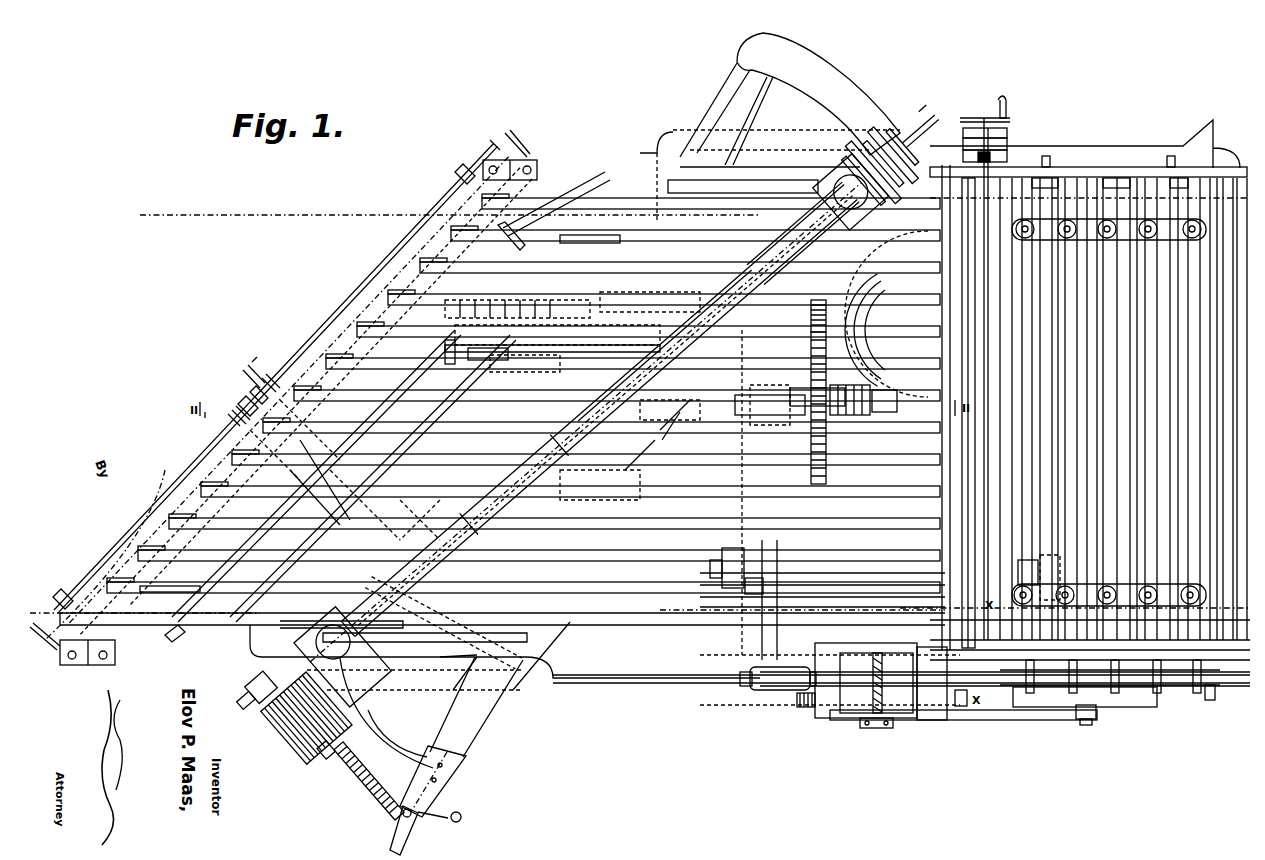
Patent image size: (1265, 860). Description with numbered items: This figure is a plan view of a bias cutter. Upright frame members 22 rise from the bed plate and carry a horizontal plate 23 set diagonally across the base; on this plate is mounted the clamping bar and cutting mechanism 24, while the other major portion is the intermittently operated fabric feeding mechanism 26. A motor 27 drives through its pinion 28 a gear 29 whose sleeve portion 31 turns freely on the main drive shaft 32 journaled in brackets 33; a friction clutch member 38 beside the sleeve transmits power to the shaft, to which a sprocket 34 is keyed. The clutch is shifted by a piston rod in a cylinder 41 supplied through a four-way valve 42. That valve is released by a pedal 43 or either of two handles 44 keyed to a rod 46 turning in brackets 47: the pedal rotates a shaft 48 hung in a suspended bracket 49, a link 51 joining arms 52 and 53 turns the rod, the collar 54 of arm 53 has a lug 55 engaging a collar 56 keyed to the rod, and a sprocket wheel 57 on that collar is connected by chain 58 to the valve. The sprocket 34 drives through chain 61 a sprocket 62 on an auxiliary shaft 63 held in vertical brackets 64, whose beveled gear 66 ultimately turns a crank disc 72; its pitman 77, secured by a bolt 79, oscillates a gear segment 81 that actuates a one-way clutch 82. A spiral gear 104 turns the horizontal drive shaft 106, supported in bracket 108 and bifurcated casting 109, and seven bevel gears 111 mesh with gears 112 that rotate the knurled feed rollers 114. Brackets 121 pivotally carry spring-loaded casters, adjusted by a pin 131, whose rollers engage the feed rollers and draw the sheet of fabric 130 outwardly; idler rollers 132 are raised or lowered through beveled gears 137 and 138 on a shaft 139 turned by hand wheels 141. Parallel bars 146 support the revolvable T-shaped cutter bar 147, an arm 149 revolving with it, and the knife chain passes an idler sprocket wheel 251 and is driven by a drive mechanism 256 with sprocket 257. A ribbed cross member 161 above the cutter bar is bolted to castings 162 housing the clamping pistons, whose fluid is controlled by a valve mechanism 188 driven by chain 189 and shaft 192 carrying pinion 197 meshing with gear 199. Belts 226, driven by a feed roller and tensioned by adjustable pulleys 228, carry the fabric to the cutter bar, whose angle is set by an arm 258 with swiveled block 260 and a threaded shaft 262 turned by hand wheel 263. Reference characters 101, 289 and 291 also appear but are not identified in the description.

The vertical frame members 22 is at (1120, 145).
The horizontal plate 23 is at (722, 118).
The clamping bar and cutting mechanism 24 is at (868, 118).
The fabric feeding mechanism 26 is at (990, 714).
The motor 27 is at (912, 275).
The pinion 28 is at (822, 335).
The gear 29 is at (826, 380).
The sleeve portion 31 is at (848, 415).
The shaft 32 is at (715, 395).
The brackets 33 is at (875, 412).
The sprocket 34 is at (752, 395).
The friction clutch member 38 is at (795, 410).
The cylinder 41 is at (52, 638).
The four-way valve 42 is at (405, 510).
The pedal 43 is at (205, 447).
The handles 44 is at (520, 148).
The rod 46 is at (135, 500).
The brackets 47 is at (455, 178).
The shaft 48 is at (285, 530).
The suspended bracket 49 is at (608, 178).
The link 51 is at (325, 455).
The arm 52 is at (345, 460).
The arm 53 is at (243, 370).
The collar 54 is at (268, 380).
The lug 55 is at (256, 390).
The collar 56 is at (248, 400).
The sprocket wheel 57 is at (232, 418).
The chain 58 is at (250, 425).
The chain 61 is at (744, 506).
The sprocket 62 is at (750, 577).
The auxiliary shaft 63 is at (855, 583).
The vertical brackets 64 is at (745, 603).
The beveled gear 66 is at (1048, 570).
The crank disc 72 is at (1150, 705).
The pitman 77 is at (1024, 716).
The bolt 79 is at (1085, 725).
The gear segment 81 is at (805, 710).
The one-way or ratchet clutch 82 is at (852, 650).
The tube 101 is at (790, 219).
The spiral gear 104 is at (878, 653).
The horizontal drive shaft 106 is at (905, 720).
The bracket 108 is at (770, 690).
The bifurcated casting 109 is at (1000, 142).
The bevel gears 111 is at (962, 705).
The gear 112 is at (1120, 670).
The cylindrical roller 114 is at (1090, 178).
The brackets 121 is at (1178, 706).
The sheet of fabric material 130 is at (290, 214).
The pin 131 is at (1180, 590).
The idler rollers 132 is at (968, 502).
The beveled gear 137 is at (1000, 153).
The gear 138 is at (995, 135).
The shaft 139 is at (982, 118).
The hand wheel 141 is at (1005, 110).
The parallel bars 146 is at (620, 292).
The cutter bar 147 is at (647, 325).
The arm 149 is at (648, 453).
The ribbed cross member 161 is at (572, 406).
The casting 162 is at (588, 415).
The valve mechanism 188 is at (495, 372).
The chain 189 is at (680, 420).
The shaft 192 is at (478, 360).
The pinion 197 is at (475, 300).
The gear 199 is at (453, 362).
The belts 226 is at (575, 235).
The adjustable pulley 228 is at (470, 232).
The idler sprocket wheel 251 is at (884, 132).
The drive mechanism 256 is at (321, 740).
The sprocket 257 is at (278, 734).
The arm 258 is at (445, 790).
The swiveled block 260 is at (402, 815).
The threaded shaft 262 is at (363, 801).
The hand wheel 263 is at (458, 815).
The bolt 289 is at (346, 780).
The axis line 291 is at (466, 603).